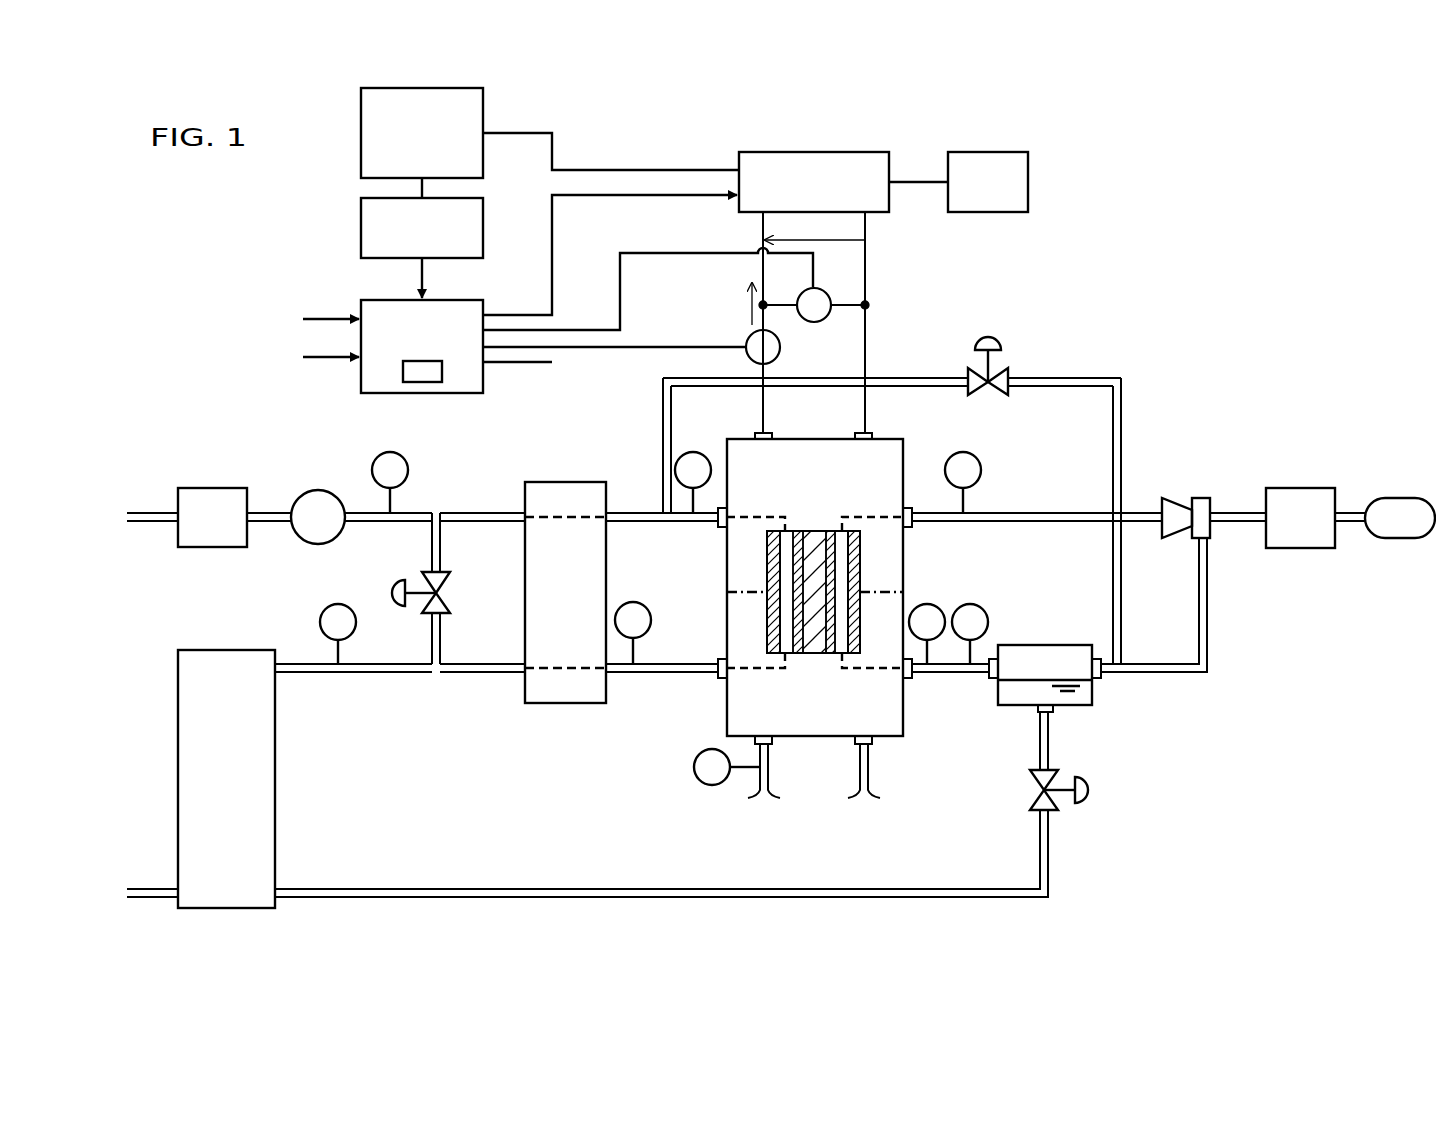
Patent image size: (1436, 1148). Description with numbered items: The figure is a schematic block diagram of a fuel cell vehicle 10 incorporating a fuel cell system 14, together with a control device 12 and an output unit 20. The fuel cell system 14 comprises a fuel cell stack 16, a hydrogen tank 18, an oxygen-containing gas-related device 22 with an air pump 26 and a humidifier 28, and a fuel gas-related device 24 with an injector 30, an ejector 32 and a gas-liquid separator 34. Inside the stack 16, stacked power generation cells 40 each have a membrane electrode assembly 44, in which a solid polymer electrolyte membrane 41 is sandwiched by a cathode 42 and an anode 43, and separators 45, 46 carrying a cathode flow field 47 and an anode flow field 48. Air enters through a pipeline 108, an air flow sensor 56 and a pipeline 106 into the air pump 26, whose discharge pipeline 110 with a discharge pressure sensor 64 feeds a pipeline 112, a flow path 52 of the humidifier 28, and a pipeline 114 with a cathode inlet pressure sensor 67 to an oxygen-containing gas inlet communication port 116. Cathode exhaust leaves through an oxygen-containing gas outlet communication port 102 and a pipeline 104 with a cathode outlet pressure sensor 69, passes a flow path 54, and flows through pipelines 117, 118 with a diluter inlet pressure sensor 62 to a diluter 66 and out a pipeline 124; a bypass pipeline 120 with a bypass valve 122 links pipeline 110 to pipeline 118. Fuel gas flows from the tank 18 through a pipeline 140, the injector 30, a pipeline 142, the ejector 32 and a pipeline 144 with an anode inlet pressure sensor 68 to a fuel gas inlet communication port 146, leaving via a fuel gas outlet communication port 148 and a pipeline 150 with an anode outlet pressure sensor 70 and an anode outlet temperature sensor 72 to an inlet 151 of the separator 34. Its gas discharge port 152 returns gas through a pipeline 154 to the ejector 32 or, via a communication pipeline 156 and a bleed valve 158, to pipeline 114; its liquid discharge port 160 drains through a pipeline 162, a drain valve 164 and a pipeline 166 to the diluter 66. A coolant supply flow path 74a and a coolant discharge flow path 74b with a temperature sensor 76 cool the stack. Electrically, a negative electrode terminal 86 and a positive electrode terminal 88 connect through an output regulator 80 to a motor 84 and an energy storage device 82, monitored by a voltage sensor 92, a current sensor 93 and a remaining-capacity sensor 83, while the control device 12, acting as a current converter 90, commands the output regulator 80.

The fuel cell vehicle 10 is at (1213, 187).
The control device 12 is at (372, 393).
The fuel cell system 14 is at (1063, 297).
The fuel cell stack 16 is at (727, 592).
The hydrogen tank 18 is at (1393, 498).
The output unit 20 is at (886, 135).
The oxygen-containing gas-related device 22 is at (228, 390).
The fuel gas-related device 24 is at (1140, 422).
The air pump 26 is at (306, 494).
The humidifier 28 is at (548, 482).
The injector 30 is at (1303, 488).
The ejector 32 is at (1170, 498).
The gas-liquid separator 34 is at (1065, 645).
The power generation cell 40 is at (758, 490).
The solid polymer electrolyte membrane 41 is at (815, 531).
The cathode 42 is at (798, 531).
The anode 43 is at (829, 531).
The membrane electrode assembly 44 is at (868, 490).
The separator 45 is at (767, 590).
The separator 46 is at (856, 583).
The cathode flow field 47 is at (785, 647).
The anode flow field 48 is at (841, 647).
The flow path 52 is at (540, 520).
The flow path 54 is at (540, 665).
The air flow sensor 56 is at (195, 488).
The diluter inlet pressure sensor 62 is at (320, 617).
The discharge pressure sensor 64 is at (403, 460).
The diluter 66 is at (275, 805).
The cathode inlet pressure sensor 67 is at (675, 462).
The anode inlet pressure sensor 68 is at (975, 458).
The cathode outlet pressure sensor 69 is at (633, 602).
The anode outlet pressure sensor 70 is at (927, 604).
The anode outlet temperature sensor 72 is at (982, 606).
The coolant supply flow path 74a is at (869, 768).
The coolant discharge flow path 74b is at (769, 768).
The temperature sensor 76 is at (694, 767).
The output regulator 80 is at (806, 152).
The energy storage device 82 is at (361, 149).
The SOC sensor 83 is at (361, 232).
The motor 84 is at (973, 152).
The negative electrode terminal 86 is at (875, 433).
The positive electrode terminal 88 is at (752, 433).
The current converter 90 is at (425, 382).
The voltage sensor 92 is at (832, 300).
The current sensor 93 is at (781, 347).
The oxygen-containing gas outlet communication port 102 is at (720, 659).
The pipeline 104 is at (640, 672).
The pipeline 106 is at (268, 522).
The pipeline 108 is at (151, 522).
The pipeline 110 is at (352, 521).
The pipeline 112 is at (475, 513).
The pipeline 114 is at (675, 522).
The oxygen-containing gas inlet communication port 116 is at (720, 528).
The pipeline 117 is at (460, 672).
The pipeline 118 is at (293, 672).
The bypass pipeline 120 is at (441, 552).
The bypass valve 122 is at (397, 583).
The pipeline 124 is at (146, 889).
The pipeline 140 is at (1352, 522).
The pipeline 142 is at (1232, 513).
The pipeline 144 is at (1018, 522).
The fuel gas inlet communication port 146 is at (913, 522).
The fuel gas outlet communication port 148 is at (905, 675).
The pipeline 150 is at (950, 675).
The inlet 151 is at (992, 655).
The gas discharge port 152 is at (1100, 677).
The pipeline 154 is at (1208, 622).
The communication pipeline 156 is at (1062, 388).
The bleed valve 158 is at (1000, 344).
The liquid discharge port 160 is at (1036, 712).
The pipeline 162 is at (1050, 745).
The drain valve 164 is at (1090, 790).
The pipeline 166 is at (748, 880).